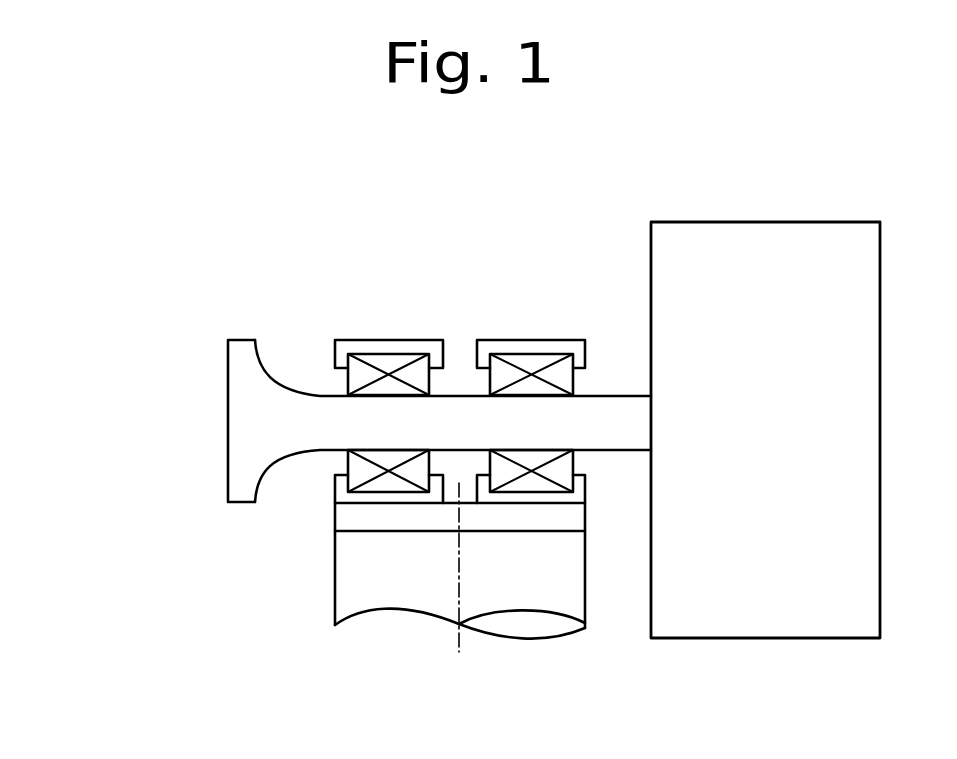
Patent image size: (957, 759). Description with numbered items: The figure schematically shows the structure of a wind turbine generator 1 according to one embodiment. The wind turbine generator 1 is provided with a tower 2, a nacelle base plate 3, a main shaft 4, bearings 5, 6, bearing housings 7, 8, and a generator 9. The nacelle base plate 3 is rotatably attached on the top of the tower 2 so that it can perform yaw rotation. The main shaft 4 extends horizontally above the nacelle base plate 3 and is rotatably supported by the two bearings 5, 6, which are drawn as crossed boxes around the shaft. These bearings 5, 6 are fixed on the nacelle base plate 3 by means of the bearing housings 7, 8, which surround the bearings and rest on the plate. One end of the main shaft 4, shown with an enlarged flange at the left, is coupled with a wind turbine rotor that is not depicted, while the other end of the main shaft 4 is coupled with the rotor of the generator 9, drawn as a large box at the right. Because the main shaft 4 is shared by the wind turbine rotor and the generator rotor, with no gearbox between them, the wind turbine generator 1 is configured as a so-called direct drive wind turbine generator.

The wind turbine generator 1 is at (120, 354).
The tower 2 is at (358, 573).
The nacelle base plate 3 is at (358, 517).
The main shaft 4 is at (242, 475).
The bearing 5 is at (380, 353).
The bearing 6 is at (550, 357).
The bearing housing 7 is at (370, 340).
The bearing housing 8 is at (523, 342).
The generator 9 is at (755, 639).